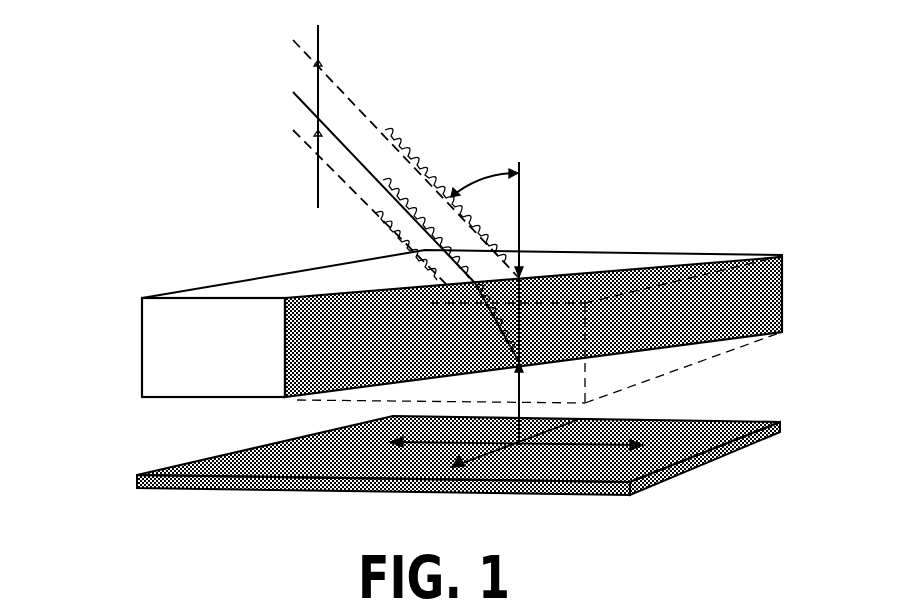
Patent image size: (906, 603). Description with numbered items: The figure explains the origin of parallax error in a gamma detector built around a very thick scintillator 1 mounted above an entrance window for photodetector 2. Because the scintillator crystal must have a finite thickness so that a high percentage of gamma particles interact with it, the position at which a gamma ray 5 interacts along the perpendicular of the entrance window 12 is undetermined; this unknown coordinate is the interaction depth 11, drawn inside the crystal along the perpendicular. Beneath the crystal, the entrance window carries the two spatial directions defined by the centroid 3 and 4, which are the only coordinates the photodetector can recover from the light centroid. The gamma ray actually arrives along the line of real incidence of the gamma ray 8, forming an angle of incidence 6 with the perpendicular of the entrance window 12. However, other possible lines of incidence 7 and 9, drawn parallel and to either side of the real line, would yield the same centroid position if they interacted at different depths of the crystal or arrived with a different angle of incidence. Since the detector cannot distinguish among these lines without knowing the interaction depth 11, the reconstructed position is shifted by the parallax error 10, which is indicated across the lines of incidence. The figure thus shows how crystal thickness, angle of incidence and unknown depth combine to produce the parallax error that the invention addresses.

The very thick scintillator 1 is at (168, 332).
The entrance window for photodetector 2 is at (220, 455).
The spatial direction defined by the centroid 3 is at (497, 452).
The spatial direction defined by the centroid 4 is at (613, 445).
The gamma ray 5 is at (403, 193).
The angle of incidence 6 is at (481, 180).
The other possible line of incidence 7 is at (397, 150).
The line of real incidence of the gamma ray 8 is at (372, 178).
The other possible line of incidence 9 is at (357, 200).
The parallax error 10 is at (318, 93).
The interaction depth 11 is at (518, 348).
The perpendicular of the entrance window 12 is at (521, 200).